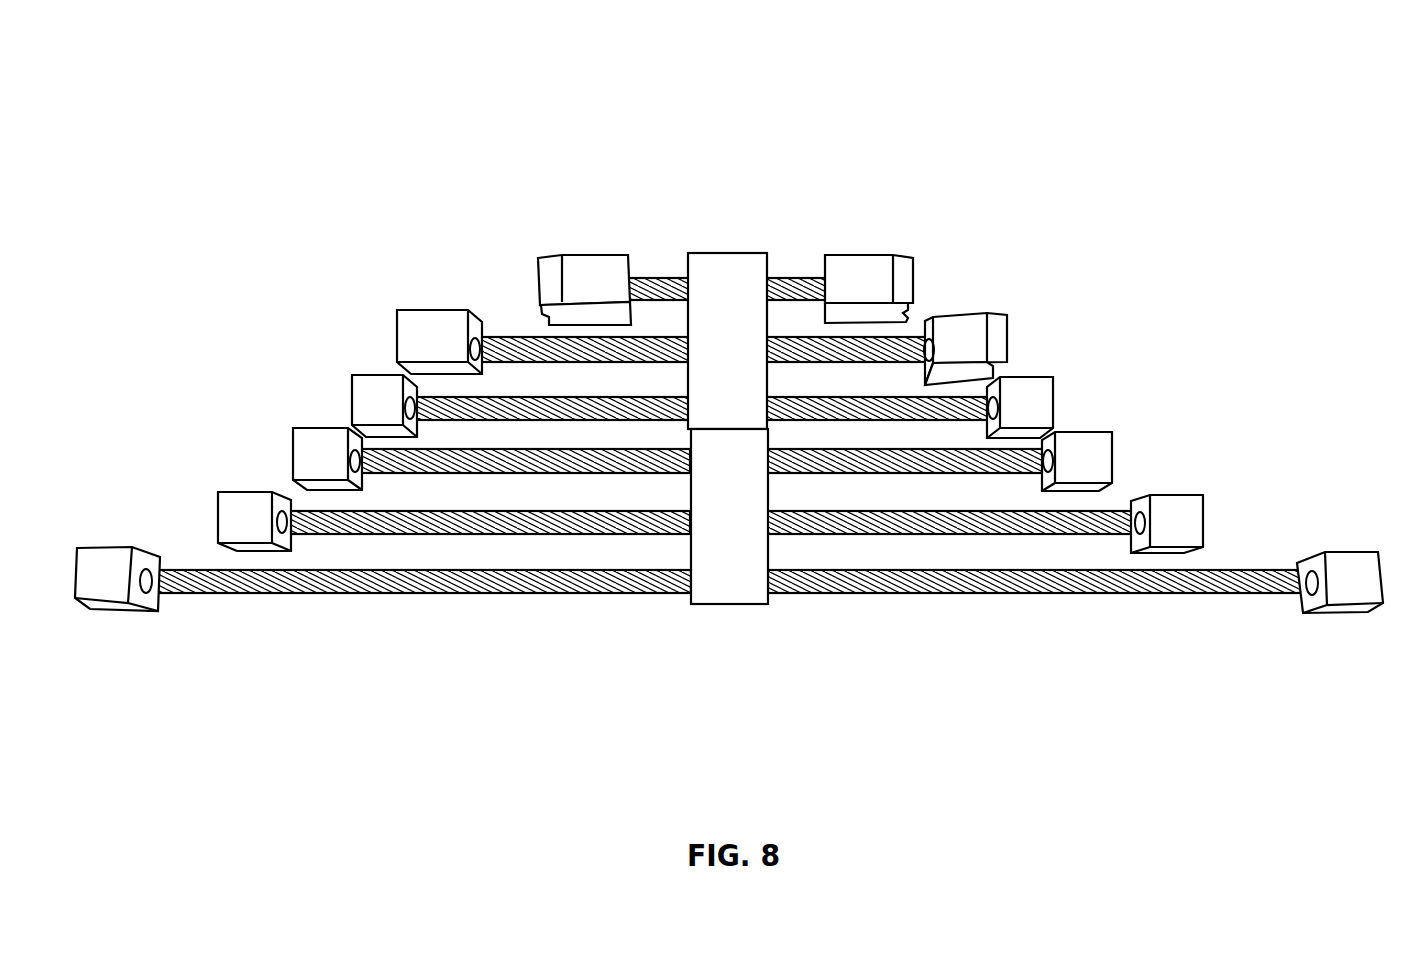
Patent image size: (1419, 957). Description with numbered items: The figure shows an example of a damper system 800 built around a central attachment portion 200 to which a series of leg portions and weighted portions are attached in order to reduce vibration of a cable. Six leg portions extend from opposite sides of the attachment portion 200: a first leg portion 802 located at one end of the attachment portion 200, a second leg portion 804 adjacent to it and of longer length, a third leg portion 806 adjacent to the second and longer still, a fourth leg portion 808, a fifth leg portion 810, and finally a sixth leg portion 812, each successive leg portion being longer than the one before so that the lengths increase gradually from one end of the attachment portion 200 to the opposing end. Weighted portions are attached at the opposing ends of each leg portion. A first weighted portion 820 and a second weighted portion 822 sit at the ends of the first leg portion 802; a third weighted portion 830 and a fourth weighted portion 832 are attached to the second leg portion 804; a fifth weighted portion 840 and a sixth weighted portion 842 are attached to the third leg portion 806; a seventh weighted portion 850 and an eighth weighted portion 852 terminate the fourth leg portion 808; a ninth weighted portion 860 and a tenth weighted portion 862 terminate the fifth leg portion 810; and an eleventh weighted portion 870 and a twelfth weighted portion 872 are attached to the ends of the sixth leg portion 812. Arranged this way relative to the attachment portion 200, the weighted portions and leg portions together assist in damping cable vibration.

The damper system 800 is at (164, 92).
The attachment portion 200 is at (737, 266).
The first leg portion 802 is at (665, 288).
The second leg portion 804 is at (683, 352).
The third leg portion 806 is at (600, 415).
The fourth leg portion 808 is at (483, 470).
The fifth leg portion 810 is at (355, 535).
The sixth leg portion 812 is at (262, 590).
The first weighted portion 820 is at (878, 270).
The second weighted portion 822 is at (583, 282).
The third weighted portion 830 is at (970, 338).
The fourth weighted portion 832 is at (432, 337).
The fifth weighted portion 840 is at (1037, 388).
The sixth weighted portion 842 is at (365, 393).
The seventh weighted portion 850 is at (1100, 443).
The eighth weighted portion 852 is at (307, 437).
The ninth weighted portion 860 is at (1187, 503).
The tenth weighted portion 862 is at (233, 507).
The eleventh weighted portion 870 is at (1357, 567).
The twelfth weighted portion 872 is at (93, 560).